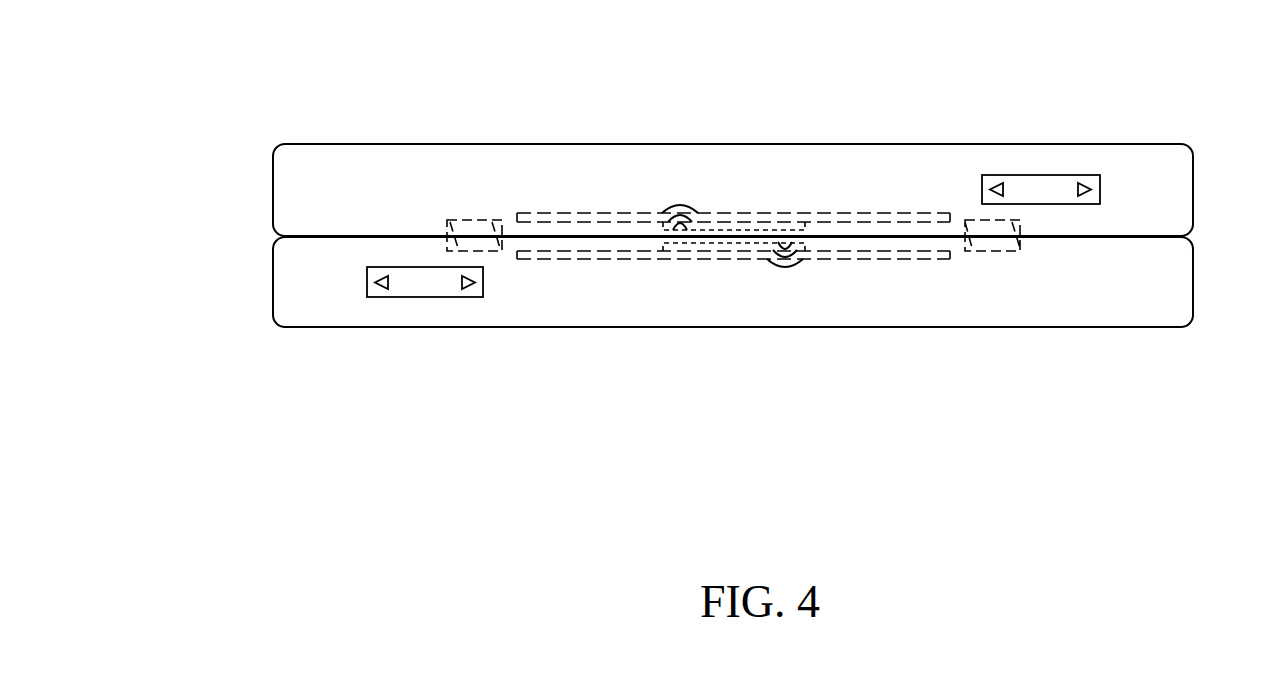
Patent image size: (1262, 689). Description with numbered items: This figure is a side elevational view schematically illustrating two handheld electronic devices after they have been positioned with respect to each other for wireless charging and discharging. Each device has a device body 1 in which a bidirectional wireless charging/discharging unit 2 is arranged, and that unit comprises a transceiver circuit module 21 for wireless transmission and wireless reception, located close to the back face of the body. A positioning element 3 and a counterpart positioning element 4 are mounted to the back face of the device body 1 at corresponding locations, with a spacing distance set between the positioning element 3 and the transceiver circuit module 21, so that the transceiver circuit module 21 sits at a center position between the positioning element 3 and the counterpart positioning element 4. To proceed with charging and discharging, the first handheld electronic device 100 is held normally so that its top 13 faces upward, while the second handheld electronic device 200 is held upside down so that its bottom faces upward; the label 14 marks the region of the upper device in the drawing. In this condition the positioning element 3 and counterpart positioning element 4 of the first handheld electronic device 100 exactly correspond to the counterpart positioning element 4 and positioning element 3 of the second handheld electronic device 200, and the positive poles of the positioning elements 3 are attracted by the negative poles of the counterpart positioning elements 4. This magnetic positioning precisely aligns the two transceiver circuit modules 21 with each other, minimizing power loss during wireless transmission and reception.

The device body 1 is at (693, 238).
The bidirectional wireless charging/discharging unit 2 is at (850, 213).
The positioning element 3 is at (1010, 204).
The counterpart positioning element 4 is at (479, 220).
The top 13 is at (273, 279).
The upper casing 14 is at (273, 189).
The transceiver circuit module 21 is at (748, 222).
The first handheld electronic device 100 is at (693, 336).
The second handheld electronic device 200 is at (693, 138).